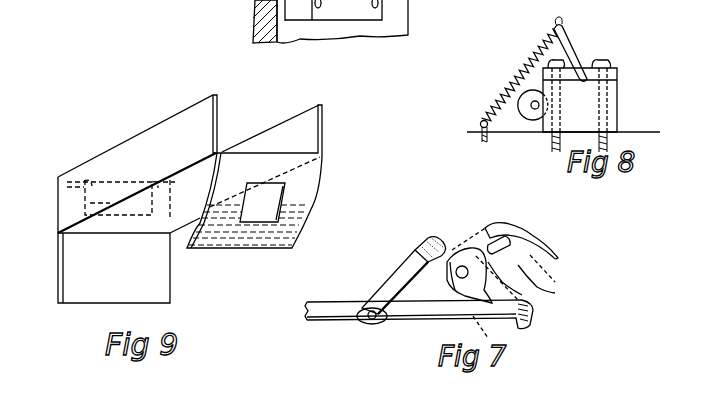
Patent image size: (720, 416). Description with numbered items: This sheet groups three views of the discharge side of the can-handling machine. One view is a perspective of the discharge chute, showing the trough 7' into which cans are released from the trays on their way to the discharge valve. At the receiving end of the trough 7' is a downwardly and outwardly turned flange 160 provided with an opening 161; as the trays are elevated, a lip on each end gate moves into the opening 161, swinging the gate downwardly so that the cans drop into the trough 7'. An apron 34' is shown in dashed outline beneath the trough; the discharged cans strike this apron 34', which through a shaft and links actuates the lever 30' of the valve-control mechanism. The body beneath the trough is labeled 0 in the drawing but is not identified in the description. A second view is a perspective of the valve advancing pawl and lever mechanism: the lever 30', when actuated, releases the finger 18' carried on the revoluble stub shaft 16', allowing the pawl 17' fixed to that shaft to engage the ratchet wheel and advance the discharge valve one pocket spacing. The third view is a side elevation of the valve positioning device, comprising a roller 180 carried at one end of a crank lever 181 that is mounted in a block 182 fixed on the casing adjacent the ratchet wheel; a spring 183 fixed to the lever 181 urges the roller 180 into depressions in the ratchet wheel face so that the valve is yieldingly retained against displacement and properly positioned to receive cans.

In FIG. 9, the trough 7' is at (137, 164).
In FIG. 9, the apron 34' is at (94, 200).
In FIG. 9, the base box 0 is at (170, 280).
In FIG. 9, the flange 160 is at (309, 197).
In FIG. 9, the opening 161 is at (260, 213).
In FIG. 8, the roller 180 is at (532, 113).
In FIG. 8, the crank lever 181 is at (577, 52).
In FIG. 8, the block 182 is at (605, 92).
In FIG. 8, the spring 183 is at (520, 83).
In FIG. 7, the stub shaft 16' is at (506, 282).
In FIG. 7, the pawl 17' is at (555, 241).
In FIG. 7, the finger 18' is at (412, 295).
In FIG. 7, the lever 30' is at (453, 318).